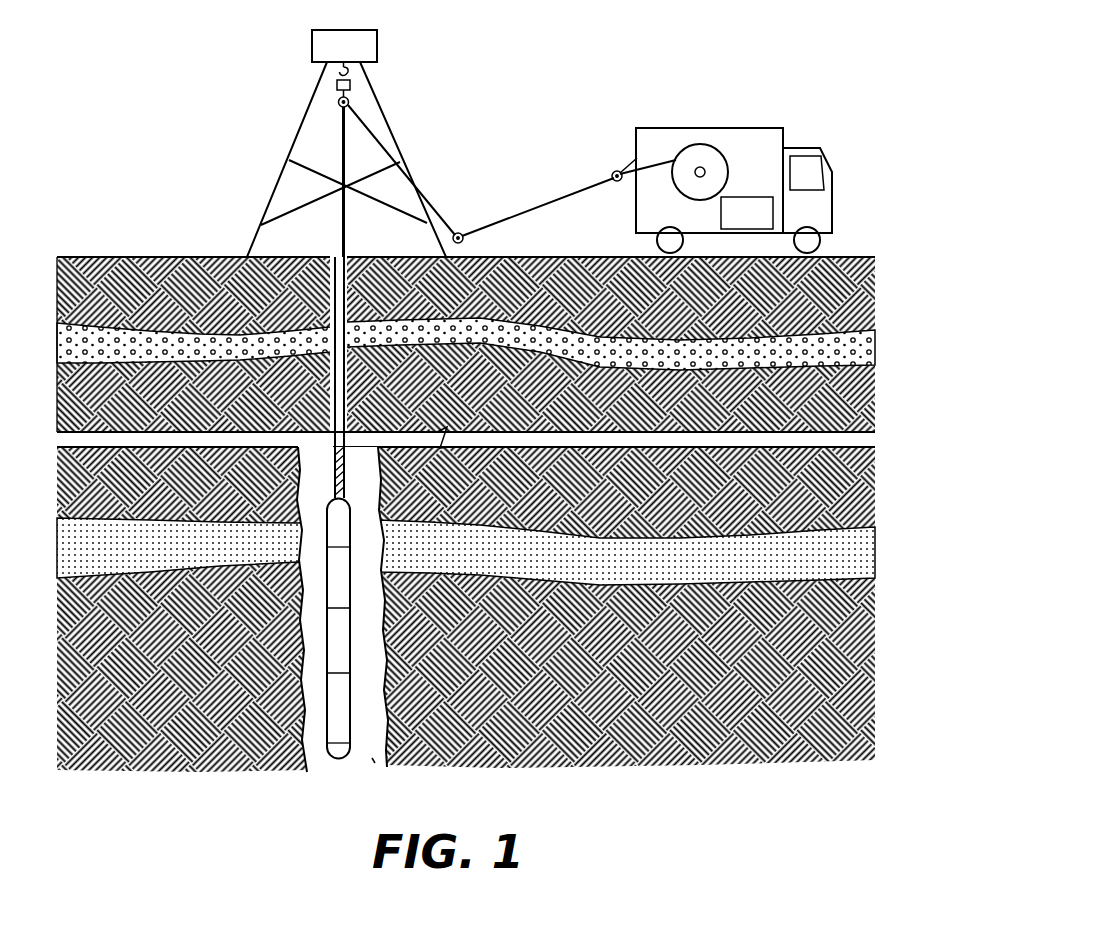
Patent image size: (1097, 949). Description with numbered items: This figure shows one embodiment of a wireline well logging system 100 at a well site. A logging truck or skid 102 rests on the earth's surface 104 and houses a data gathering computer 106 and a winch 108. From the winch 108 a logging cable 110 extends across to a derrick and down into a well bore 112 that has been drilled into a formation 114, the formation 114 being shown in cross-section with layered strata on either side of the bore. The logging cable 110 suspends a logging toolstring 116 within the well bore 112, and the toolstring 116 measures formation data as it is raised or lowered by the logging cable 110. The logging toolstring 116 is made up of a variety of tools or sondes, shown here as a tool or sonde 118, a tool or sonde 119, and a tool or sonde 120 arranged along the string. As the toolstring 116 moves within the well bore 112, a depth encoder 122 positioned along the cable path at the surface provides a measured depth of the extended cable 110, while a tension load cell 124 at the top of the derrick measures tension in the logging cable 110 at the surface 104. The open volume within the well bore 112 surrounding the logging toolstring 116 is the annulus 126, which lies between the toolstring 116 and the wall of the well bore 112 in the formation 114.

The wireline well logging system 100 is at (706, 68).
The logging truck or skid 102 is at (733, 128).
The earth's surface 104 is at (131, 257).
The data gathering computer 106 is at (766, 225).
The winch 108 is at (687, 150).
The logging cable 110 is at (561, 202).
The well bore 112 is at (334, 257).
The formation 114 is at (135, 690).
The logging toolstring 116 is at (350, 510).
The tool or sonde 118 is at (323, 583).
The tool or sonde 119 is at (350, 645).
The tool or sonde 120 is at (350, 702).
The depth encoder 122 is at (615, 171).
The tension load cell 124 is at (352, 85).
The annulus 126 is at (372, 758).